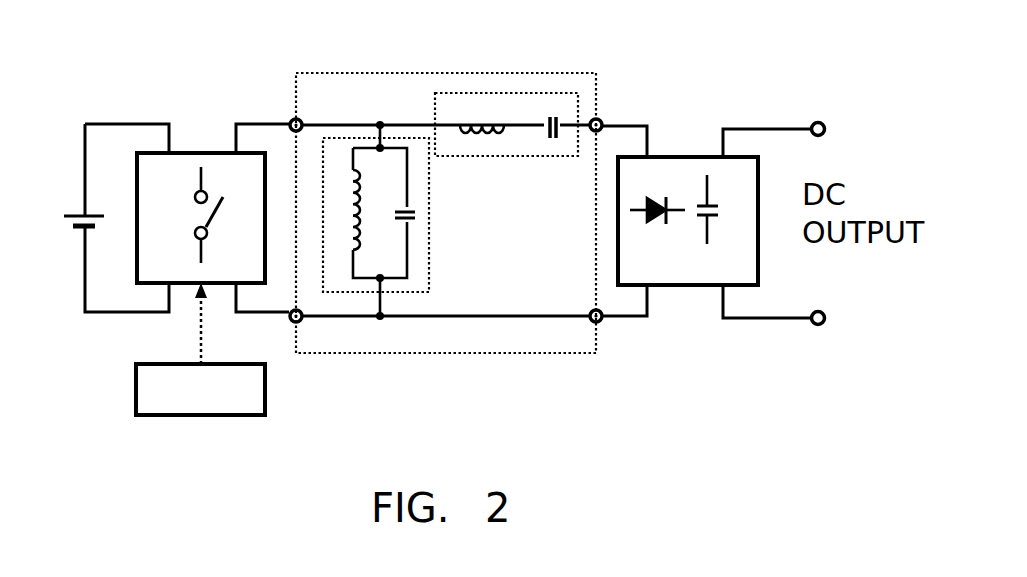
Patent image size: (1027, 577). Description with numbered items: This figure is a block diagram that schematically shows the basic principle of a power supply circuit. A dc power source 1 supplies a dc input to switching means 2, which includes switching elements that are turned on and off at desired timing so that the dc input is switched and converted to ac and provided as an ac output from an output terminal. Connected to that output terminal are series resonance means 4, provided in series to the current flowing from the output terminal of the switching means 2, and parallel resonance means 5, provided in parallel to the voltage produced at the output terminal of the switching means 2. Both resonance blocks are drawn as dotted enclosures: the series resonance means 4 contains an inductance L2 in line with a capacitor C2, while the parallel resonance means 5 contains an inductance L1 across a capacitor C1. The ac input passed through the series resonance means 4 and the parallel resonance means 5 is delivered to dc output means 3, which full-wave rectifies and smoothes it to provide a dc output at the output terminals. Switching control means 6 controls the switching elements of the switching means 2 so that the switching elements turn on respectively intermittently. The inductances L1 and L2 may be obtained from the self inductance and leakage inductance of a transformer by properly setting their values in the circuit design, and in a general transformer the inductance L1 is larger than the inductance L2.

The dc power source 1 is at (76, 230).
The switching means 2 is at (213, 153).
The dc output means 3 is at (690, 287).
The series resonance means 4 is at (462, 114).
The parallel resonance means 5 is at (418, 220).
The switching control means 6 is at (265, 392).
The inductance of the parallel resonance means L1 is at (358, 228).
The inductance of the series resonance means L2 is at (483, 123).
The capacitor of the parallel resonance means C1 is at (413, 211).
The capacitor of the series resonance means C2 is at (553, 115).